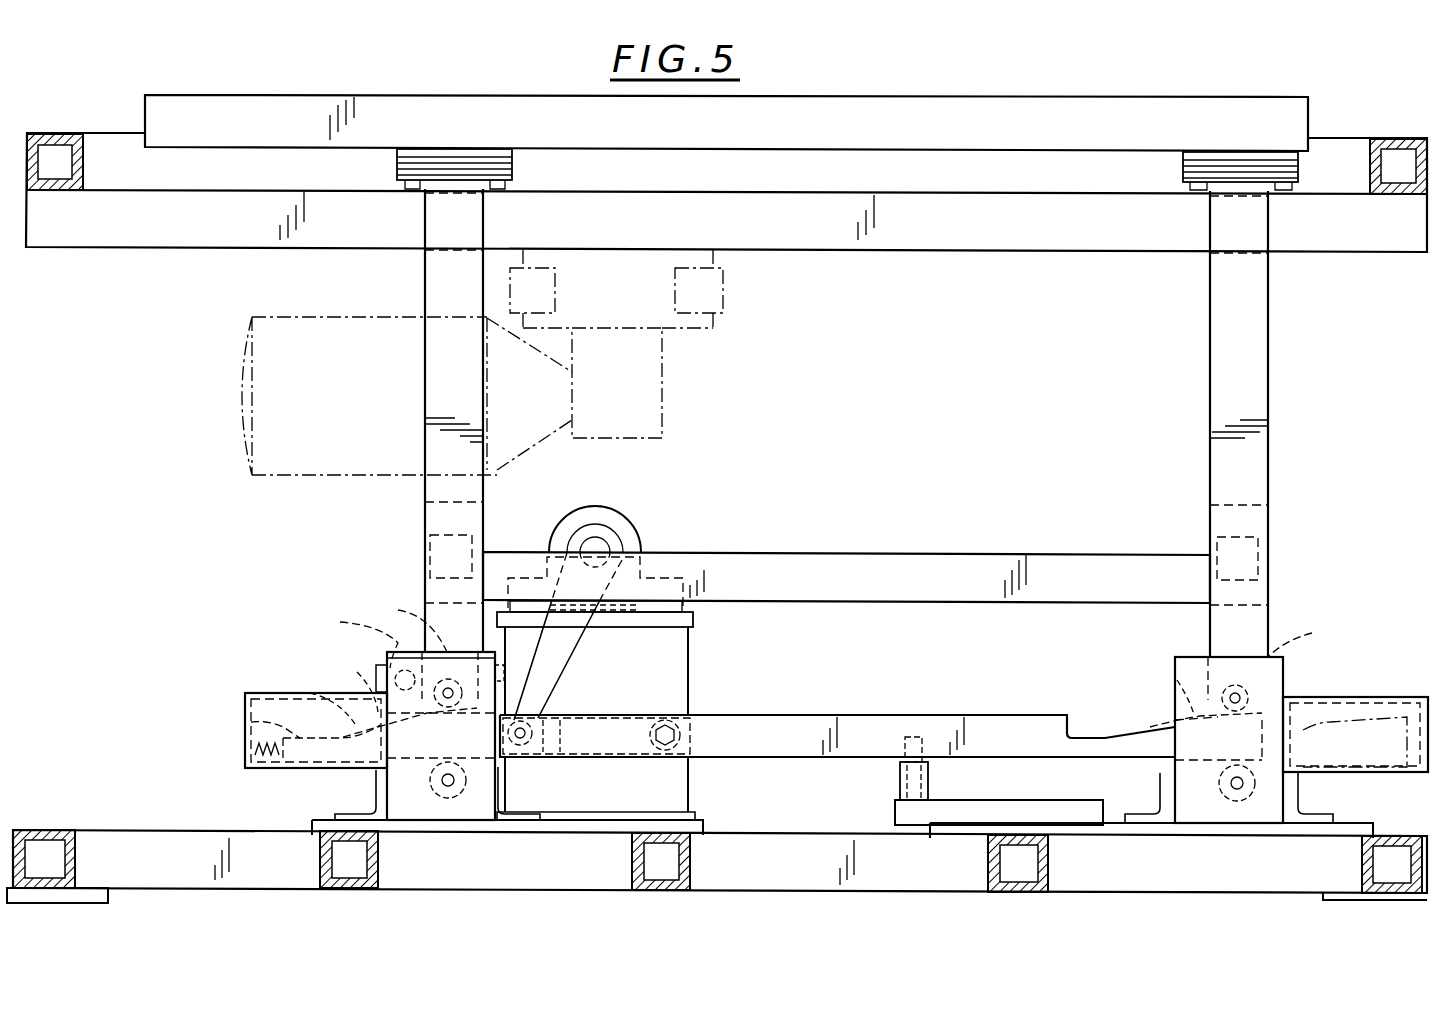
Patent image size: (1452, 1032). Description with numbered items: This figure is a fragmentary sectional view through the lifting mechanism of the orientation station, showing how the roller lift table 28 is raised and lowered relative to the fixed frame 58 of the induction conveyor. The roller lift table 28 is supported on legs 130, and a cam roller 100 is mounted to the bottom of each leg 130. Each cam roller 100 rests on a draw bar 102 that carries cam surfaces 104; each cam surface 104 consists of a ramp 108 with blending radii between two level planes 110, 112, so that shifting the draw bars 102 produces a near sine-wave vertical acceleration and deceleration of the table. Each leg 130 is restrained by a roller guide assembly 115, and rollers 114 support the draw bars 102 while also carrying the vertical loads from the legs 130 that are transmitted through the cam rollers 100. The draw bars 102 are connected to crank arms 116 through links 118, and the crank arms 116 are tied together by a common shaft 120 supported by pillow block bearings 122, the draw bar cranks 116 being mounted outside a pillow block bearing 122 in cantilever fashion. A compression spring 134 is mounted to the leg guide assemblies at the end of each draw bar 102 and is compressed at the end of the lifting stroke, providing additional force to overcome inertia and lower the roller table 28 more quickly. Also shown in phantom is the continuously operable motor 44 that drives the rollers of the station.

The roller lift table 28 is at (1288, 120).
The fixed frame 58 is at (1117, 235).
The continuously operable motor 44 is at (376, 410).
The legs 130 is at (428, 520).
The common shaft 120 is at (594, 549).
The pillow block bearings 122 is at (638, 536).
The crank arms 116 is at (562, 657).
The links 118 is at (613, 738).
The rollers 114 is at (466, 792).
The level plane 112 is at (1310, 680).
The cam rollers 100 is at (855, 622).
The cam surfaces 104 is at (357, 672).
The ramp 108 is at (320, 700).
The level plane 110 is at (250, 722).
The roller guide assemblies 115 is at (348, 639).
The compression spring 134 is at (263, 768).
The draw bars 102 is at (985, 722).